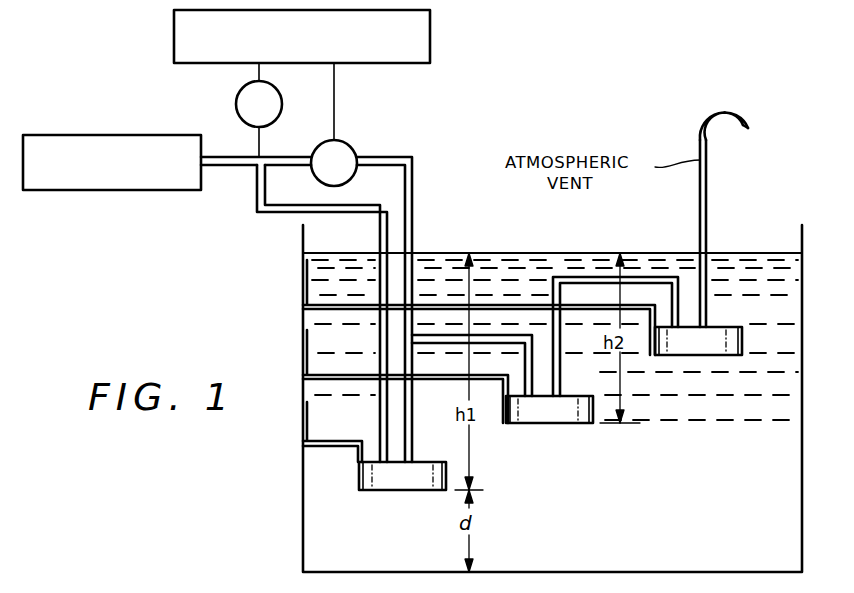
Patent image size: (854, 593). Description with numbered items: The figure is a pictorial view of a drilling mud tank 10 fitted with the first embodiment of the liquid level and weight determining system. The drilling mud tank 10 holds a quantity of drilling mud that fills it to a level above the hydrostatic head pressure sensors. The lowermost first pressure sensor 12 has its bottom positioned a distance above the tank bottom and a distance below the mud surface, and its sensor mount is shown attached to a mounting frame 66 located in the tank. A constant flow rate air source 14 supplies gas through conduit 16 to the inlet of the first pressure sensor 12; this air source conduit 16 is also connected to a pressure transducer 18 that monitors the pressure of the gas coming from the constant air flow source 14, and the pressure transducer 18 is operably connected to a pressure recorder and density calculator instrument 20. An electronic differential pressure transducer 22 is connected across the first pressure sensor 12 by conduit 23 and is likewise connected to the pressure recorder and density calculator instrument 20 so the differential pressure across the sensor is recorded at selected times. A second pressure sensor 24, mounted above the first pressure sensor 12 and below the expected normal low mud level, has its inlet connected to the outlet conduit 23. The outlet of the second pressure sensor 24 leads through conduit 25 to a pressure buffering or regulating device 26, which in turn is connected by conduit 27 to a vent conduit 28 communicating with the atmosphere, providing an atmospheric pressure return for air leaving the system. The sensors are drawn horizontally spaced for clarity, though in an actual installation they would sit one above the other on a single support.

The drilling mud tank 10 is at (302, 503).
The first pressure sensor 12 is at (388, 483).
The constant flow rate air source 14 is at (104, 135).
The conduit 16 is at (257, 208).
The pressure transducer 18 is at (244, 94).
The pressure recorder and density calculator instrument 20 is at (430, 45).
The electronic differential pressure transducer 22 is at (345, 148).
The conduit 23 is at (415, 215).
The second pressure sensor 24 is at (555, 414).
The conduit 25 is at (587, 278).
The pressure buffering or regulating device 26 is at (707, 345).
The conduit 27 is at (706, 228).
The vent conduit 28 is at (725, 115).
The mounting frame 66 is at (306, 421).